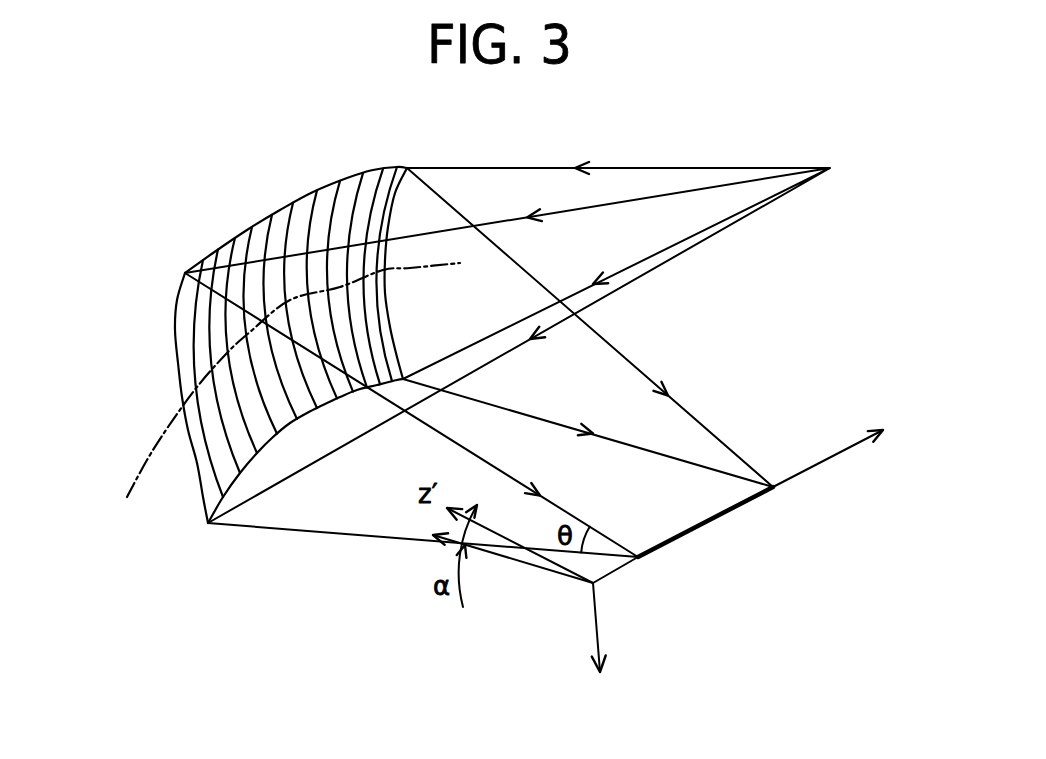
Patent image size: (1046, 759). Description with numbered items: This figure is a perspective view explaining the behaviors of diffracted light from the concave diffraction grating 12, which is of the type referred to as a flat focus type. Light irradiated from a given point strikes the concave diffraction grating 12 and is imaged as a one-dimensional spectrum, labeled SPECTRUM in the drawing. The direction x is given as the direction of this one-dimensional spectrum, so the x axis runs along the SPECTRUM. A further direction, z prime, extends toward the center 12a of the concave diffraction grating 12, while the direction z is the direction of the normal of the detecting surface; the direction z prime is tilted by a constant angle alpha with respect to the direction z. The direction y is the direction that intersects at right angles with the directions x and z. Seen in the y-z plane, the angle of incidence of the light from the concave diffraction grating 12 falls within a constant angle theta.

The concave diffraction grating 12 is at (175, 355).
The center of the concave diffraction grating 12a is at (143, 475).
The spectrum SPECTRUM is at (710, 523).
The direction x is at (747, 496).
The direction y is at (601, 646).
The direction z is at (500, 548).